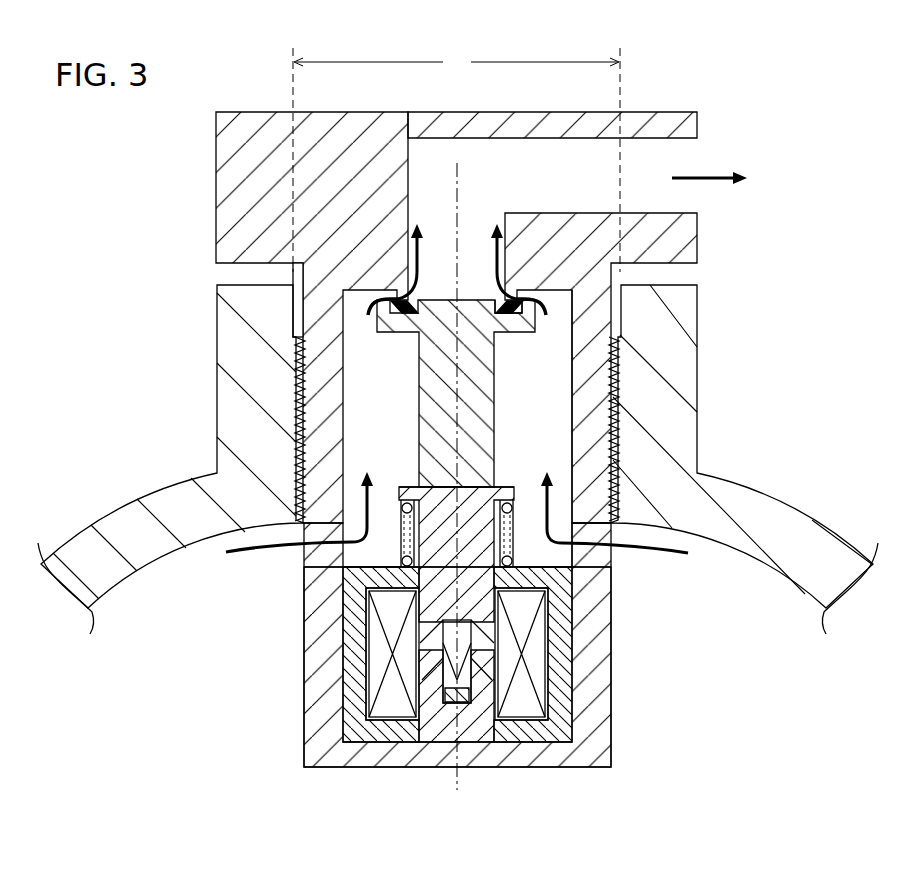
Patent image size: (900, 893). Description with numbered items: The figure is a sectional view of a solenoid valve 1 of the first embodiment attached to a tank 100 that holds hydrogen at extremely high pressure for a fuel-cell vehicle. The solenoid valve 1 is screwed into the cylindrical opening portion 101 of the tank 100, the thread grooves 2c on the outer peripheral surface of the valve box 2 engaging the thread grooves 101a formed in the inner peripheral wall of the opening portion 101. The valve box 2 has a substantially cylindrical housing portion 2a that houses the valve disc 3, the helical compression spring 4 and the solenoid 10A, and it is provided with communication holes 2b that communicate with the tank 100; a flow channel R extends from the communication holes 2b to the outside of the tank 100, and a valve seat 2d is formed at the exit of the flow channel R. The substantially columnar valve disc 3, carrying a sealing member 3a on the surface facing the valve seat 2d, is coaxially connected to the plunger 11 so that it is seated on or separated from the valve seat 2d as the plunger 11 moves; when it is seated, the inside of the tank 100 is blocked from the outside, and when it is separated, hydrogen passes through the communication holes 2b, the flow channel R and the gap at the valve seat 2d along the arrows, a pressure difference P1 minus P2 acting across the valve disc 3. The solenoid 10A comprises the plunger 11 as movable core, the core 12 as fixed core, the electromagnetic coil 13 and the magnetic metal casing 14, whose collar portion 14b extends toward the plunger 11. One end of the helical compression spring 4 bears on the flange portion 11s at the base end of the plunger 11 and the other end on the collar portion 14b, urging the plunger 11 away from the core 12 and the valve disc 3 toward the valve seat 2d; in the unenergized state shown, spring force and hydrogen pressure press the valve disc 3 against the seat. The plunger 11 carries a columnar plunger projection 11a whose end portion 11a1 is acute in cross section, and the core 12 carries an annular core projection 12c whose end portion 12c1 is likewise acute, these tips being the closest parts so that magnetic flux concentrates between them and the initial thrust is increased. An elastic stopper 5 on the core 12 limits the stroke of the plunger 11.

The solenoid valve 1 is at (781, 91).
The valve box 2 is at (627, 430).
The housing portion 2a is at (597, 460).
The communication holes 2b is at (602, 556).
The thread grooves 2c is at (613, 378).
The valve seat 2d is at (510, 297).
The valve disc 3 is at (484, 356).
The sealing member 3a is at (533, 314).
The helical compression spring 4 is at (560, 592).
The stopper 5 is at (462, 703).
The solenoid 10A is at (662, 673).
The plunger 11 is at (432, 600).
The plunger projection 11a is at (458, 628).
The end portion 11a1 is at (437, 659).
The flange portion 11s is at (408, 486).
The core 12 is at (422, 740).
The core projection 12c is at (428, 703).
The end portion 12c1 is at (432, 686).
The electromagnetic coil 13 is at (563, 663).
The casing 14 is at (575, 718).
The collar portion 14b is at (378, 578).
The tank 100 is at (801, 503).
The opening portion 101 is at (235, 345).
The thread grooves 101a is at (300, 381).
The pressure upstream of valve disc P1 is at (540, 404).
The pressure downstream of valve disc P2 is at (476, 228).
The flow channel R is at (118, 443).